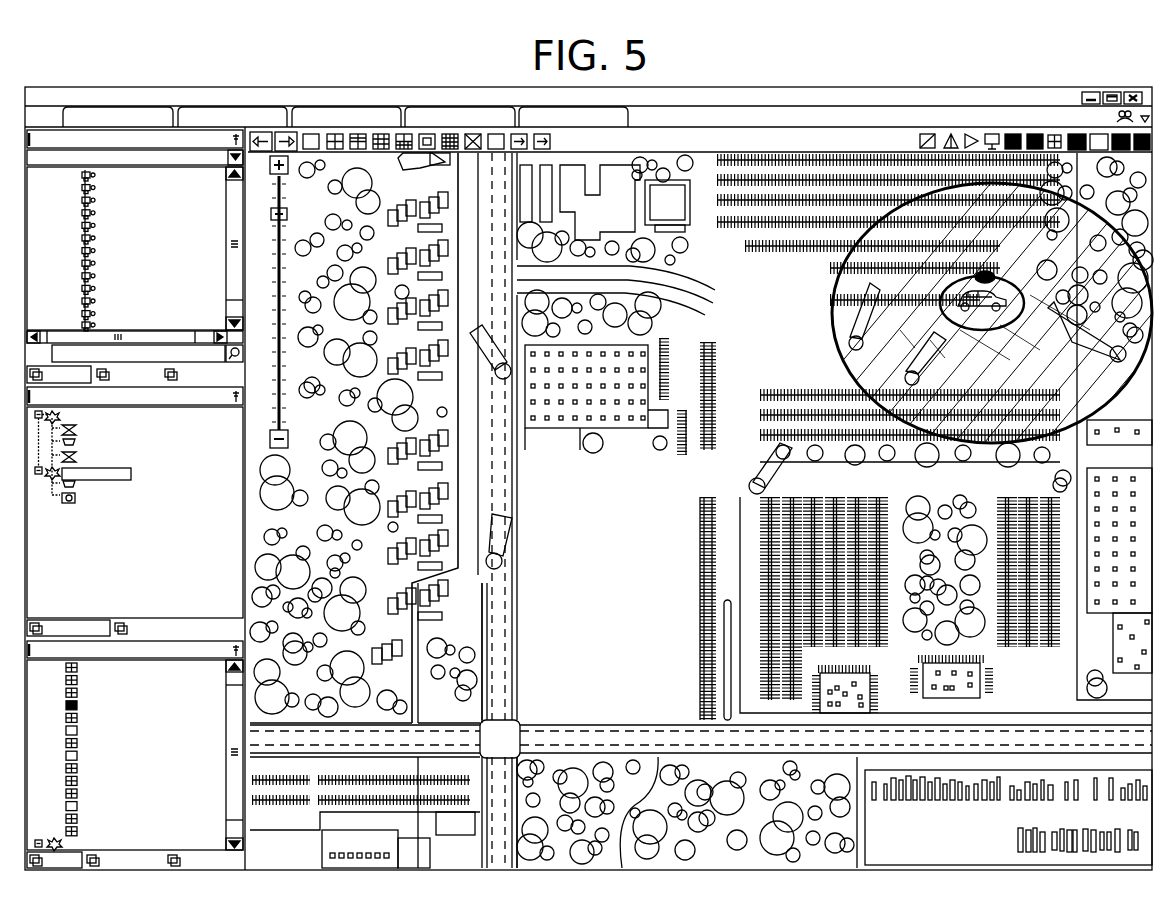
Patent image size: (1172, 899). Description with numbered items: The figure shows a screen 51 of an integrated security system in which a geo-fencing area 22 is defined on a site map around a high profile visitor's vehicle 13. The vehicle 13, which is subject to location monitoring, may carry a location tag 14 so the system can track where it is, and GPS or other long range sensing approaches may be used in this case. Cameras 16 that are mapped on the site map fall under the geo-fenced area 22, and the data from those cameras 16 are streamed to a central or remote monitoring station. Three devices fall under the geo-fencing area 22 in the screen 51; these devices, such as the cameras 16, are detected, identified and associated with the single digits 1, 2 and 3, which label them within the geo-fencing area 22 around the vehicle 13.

The single digit 1 is at (848, 303).
The single digit 2 is at (922, 352).
The single digit 3 is at (1045, 343).
The high profile visitor's vehicle 13 is at (1002, 286).
The location tag 14 is at (1003, 343).
The camera 16 is at (849, 308).
The geo-fencing area 22 is at (857, 382).
The screen 51 is at (1088, 78).